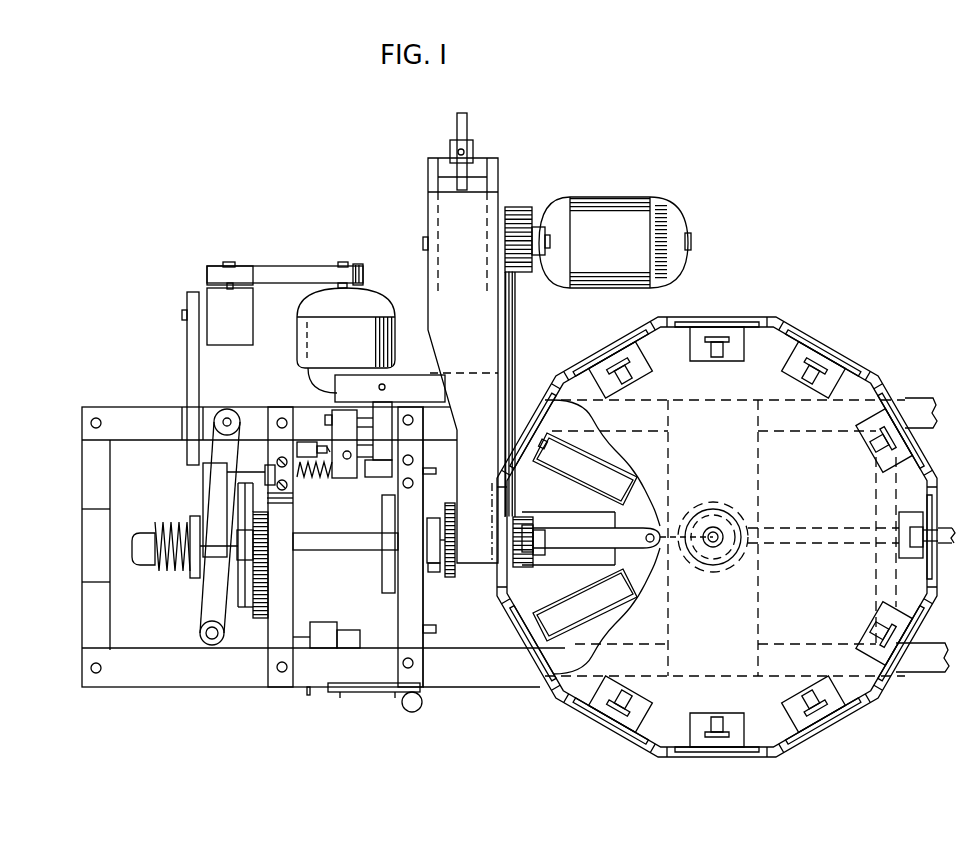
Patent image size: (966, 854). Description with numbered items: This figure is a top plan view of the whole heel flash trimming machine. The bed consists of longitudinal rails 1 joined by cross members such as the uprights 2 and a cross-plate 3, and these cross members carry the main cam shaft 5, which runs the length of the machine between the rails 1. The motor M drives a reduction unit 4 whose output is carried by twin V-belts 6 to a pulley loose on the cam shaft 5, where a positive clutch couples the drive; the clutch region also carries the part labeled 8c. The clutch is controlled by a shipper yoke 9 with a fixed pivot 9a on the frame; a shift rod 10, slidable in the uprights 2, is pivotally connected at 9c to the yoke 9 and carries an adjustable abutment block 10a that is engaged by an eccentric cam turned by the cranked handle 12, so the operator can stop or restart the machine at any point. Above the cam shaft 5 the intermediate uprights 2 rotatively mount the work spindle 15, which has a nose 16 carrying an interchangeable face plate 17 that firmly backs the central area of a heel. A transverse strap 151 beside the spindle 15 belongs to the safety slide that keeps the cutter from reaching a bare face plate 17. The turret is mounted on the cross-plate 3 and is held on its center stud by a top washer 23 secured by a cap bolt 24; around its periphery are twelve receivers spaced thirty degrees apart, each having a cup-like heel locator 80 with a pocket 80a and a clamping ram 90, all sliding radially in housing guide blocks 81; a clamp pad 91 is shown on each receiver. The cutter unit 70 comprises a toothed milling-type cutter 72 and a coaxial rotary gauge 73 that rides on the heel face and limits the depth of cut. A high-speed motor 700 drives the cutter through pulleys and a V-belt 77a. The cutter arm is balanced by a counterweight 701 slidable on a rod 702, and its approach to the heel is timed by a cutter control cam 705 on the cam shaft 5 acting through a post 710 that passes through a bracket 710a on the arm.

The longitudinal rails 1 is at (507, 673).
The uprights 2 is at (84, 478).
The cross-plate 3 is at (758, 620).
The reduction unit 4 is at (233, 338).
The cam shaft 5 is at (944, 527).
The twin V-belts 6 is at (187, 370).
The adjusting screws 8c is at (262, 497).
The shipper yoke 9 is at (207, 600).
The fixed pivot 9a is at (229, 409).
The pivotal connection 9c is at (200, 634).
The shift rod 10 is at (362, 636).
The adjustable abutment block 10a is at (328, 623).
The cranked handle 12 is at (360, 693).
The spindle 15 is at (350, 545).
The nose 16 is at (433, 572).
The face plate 17 is at (440, 578).
The top washer 23 is at (745, 527).
The cap bolt 24 is at (745, 548).
The cutter unit 70 is at (458, 582).
The toothed cutter 72 is at (436, 516).
The rotary cylindrical gauge 73 is at (452, 504).
The V-belt 77a is at (510, 330).
The heel locator 80 is at (775, 322).
The locator cup 80a is at (800, 333).
The housing guide block 81 is at (562, 595).
The clamping holder 90 is at (840, 360).
The clamp pad 91 is at (800, 355).
The transverse strap 151 is at (215, 495).
The high-speed motor 700 is at (626, 254).
The counterweight 701 is at (473, 150).
The rod 702 is at (457, 125).
The cutter control cam 705 is at (388, 512).
The post 710 is at (386, 387).
The bracket 710a is at (413, 378).
The motor M is at (302, 345).